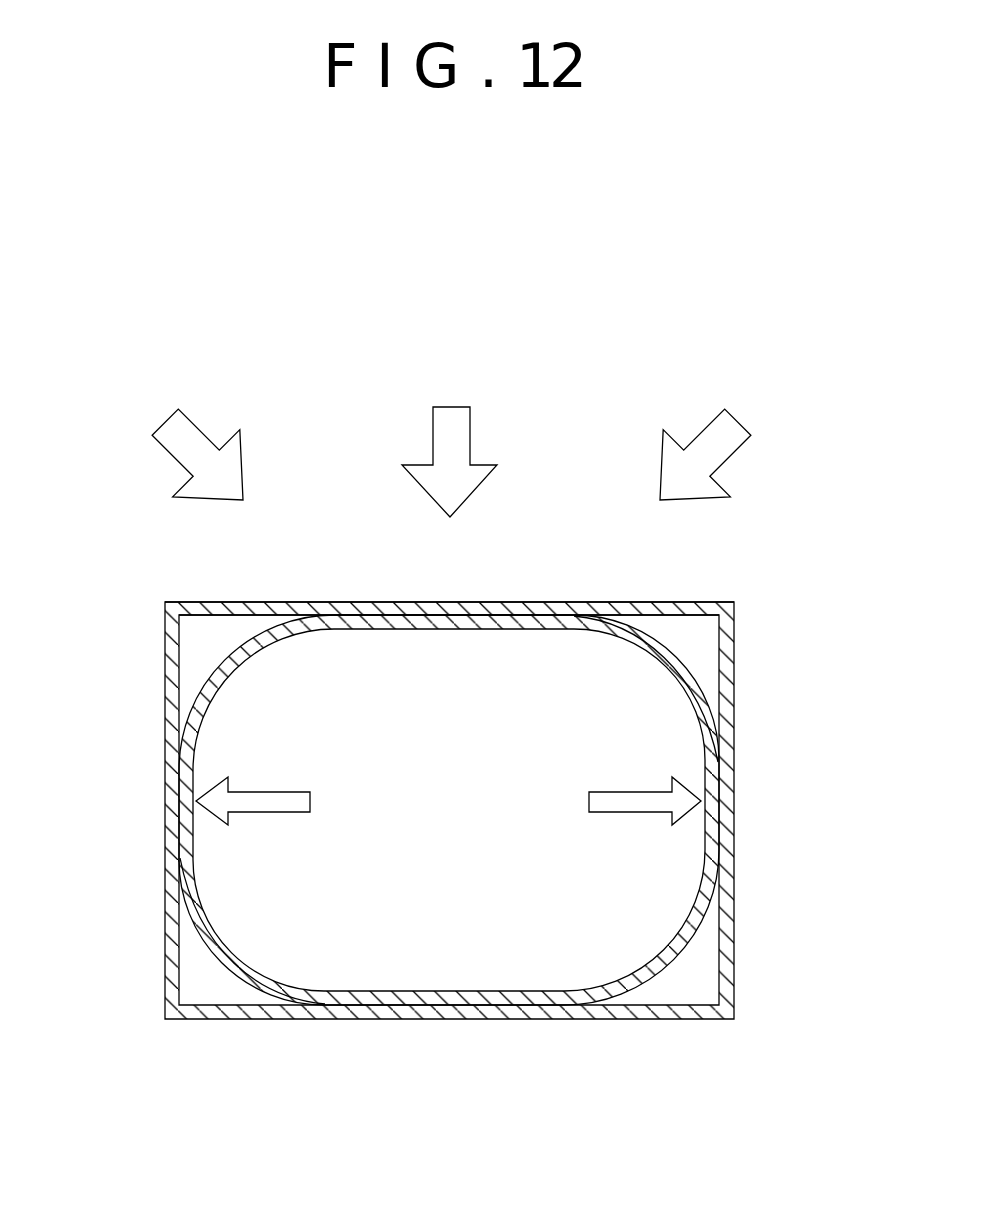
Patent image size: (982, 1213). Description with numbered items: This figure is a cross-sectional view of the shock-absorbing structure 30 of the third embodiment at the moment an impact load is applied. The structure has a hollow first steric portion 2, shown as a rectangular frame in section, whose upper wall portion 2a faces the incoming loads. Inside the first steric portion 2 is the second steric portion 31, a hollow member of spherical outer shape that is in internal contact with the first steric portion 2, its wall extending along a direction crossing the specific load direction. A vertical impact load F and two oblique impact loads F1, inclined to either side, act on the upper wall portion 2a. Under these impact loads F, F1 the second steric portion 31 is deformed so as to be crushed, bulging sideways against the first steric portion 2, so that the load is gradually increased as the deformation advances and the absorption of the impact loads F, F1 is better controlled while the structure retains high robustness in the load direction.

The shock-absorbing structure 30 is at (137, 357).
The first steric portion 2 is at (738, 675).
The upper wall portion 2a is at (237, 603).
The second steric portion 31 is at (208, 670).
The impact load F is at (433, 425).
The impact load F1 is at (200, 430).